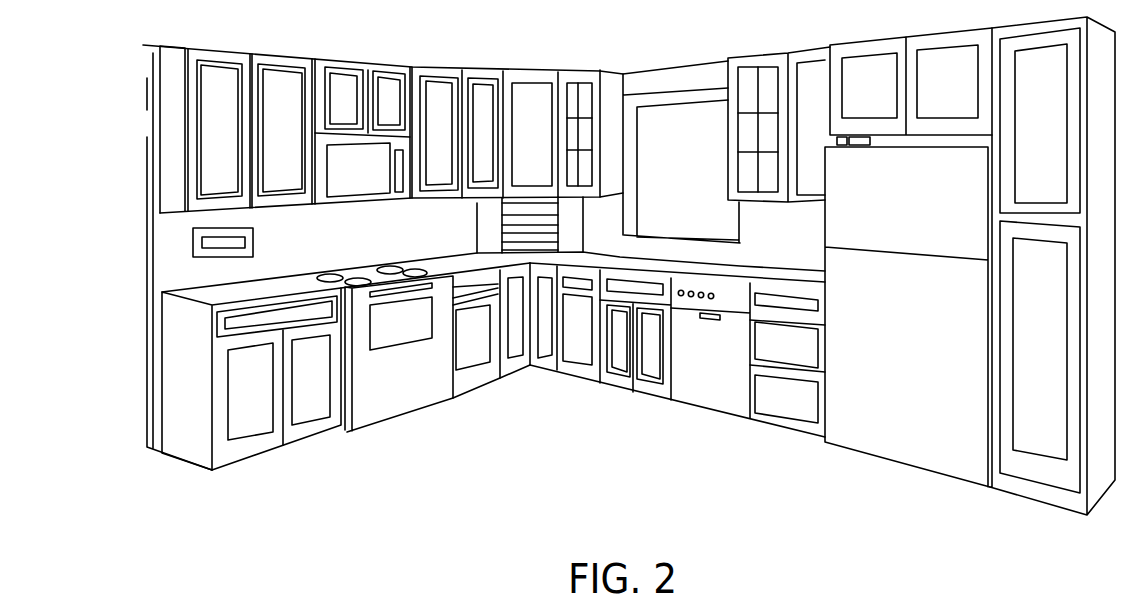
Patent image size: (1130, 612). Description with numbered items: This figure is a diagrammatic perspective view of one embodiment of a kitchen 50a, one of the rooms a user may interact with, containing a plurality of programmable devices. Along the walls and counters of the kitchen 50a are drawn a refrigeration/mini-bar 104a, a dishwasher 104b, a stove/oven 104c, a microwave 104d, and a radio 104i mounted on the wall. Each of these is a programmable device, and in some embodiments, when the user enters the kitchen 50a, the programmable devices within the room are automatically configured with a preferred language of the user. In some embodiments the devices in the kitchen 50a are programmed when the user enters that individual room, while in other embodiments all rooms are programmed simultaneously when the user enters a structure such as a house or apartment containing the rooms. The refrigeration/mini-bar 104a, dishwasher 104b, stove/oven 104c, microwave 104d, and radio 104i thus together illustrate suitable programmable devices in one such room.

The kitchen 50a is at (595, 266).
The refrigeration/mini-bar 104a is at (892, 417).
The dishwasher 104b is at (705, 382).
The stove/oven 104c is at (407, 390).
The microwave 104d is at (358, 183).
The radio 104i is at (193, 243).